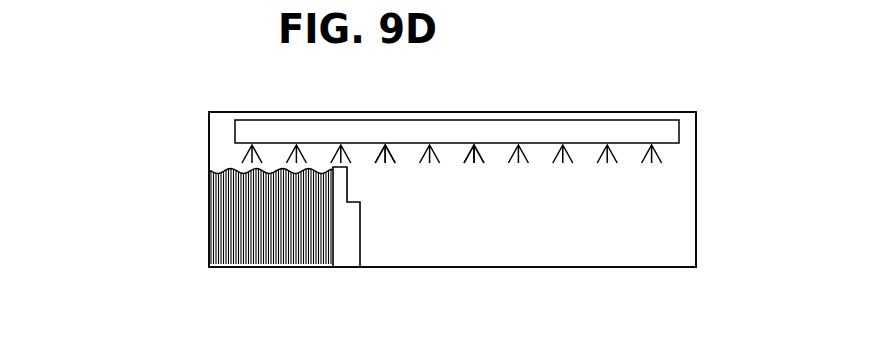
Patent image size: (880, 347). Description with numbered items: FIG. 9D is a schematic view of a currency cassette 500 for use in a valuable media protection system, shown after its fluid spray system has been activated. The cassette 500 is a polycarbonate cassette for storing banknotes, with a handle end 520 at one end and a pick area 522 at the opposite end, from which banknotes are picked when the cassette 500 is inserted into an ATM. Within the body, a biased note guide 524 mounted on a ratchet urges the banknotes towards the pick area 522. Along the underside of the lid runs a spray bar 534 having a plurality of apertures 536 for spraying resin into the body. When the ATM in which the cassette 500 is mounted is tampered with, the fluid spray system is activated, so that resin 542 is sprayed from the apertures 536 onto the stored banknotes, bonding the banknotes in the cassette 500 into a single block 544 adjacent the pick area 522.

The currency cassette 500 is at (502, 112).
The handle end 520 is at (696, 132).
The pick area 522 is at (271, 206).
The biased note guide 524 is at (347, 252).
The spray bar 534 is at (582, 130).
The apertures 536 is at (474, 145).
The resin 542 is at (466, 165).
The single block 544 is at (287, 240).